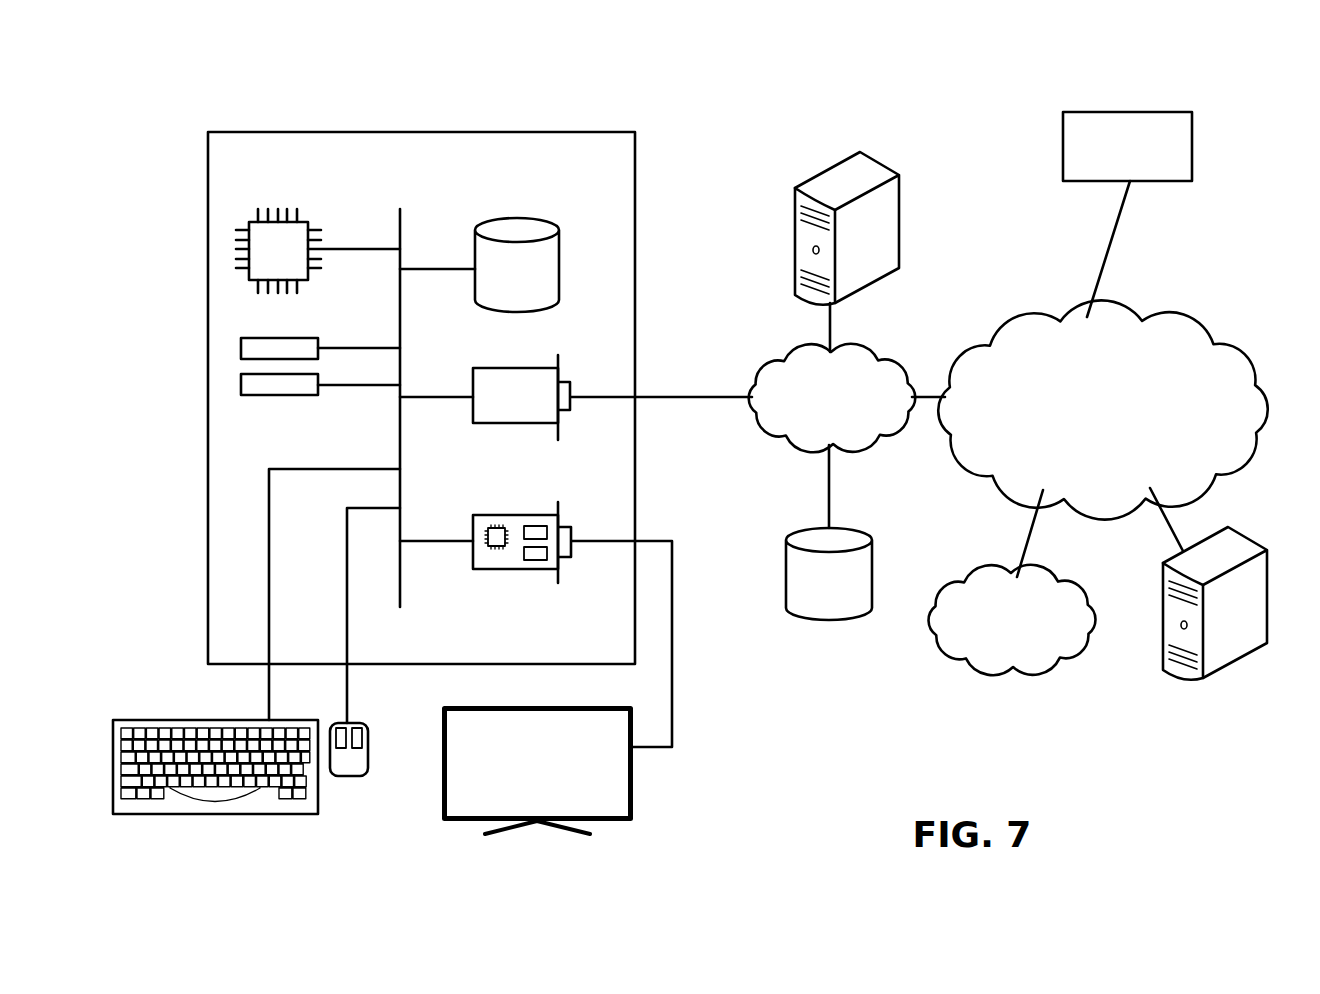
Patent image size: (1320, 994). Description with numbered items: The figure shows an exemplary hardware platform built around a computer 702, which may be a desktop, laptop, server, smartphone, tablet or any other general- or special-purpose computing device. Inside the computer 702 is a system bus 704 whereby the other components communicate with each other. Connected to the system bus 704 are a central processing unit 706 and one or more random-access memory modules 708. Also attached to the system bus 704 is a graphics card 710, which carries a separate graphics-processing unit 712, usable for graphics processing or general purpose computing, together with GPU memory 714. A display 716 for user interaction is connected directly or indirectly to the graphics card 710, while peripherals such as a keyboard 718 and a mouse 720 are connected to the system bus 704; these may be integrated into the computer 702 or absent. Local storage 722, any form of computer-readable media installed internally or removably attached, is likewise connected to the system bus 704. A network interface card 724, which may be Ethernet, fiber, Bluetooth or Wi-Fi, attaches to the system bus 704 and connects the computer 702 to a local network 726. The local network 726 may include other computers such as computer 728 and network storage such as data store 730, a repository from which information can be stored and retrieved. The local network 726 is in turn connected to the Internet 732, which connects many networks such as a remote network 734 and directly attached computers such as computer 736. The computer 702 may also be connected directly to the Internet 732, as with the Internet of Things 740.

The computer 702 is at (590, 132).
The system bus 704 is at (402, 218).
The central processing unit (CPU) 706 is at (305, 218).
The random-access memory (RAM) modules 708 is at (319, 383).
The graphics card 710 is at (536, 609).
The graphics-processing unit (GPU) 712 is at (495, 548).
The GPU memory 714 is at (534, 561).
The display 716 is at (633, 800).
The keyboard 718 is at (218, 814).
The mouse 720 is at (347, 776).
The local storage 722 is at (562, 250).
The network interface card (NIC) 724 is at (471, 380).
The local network 726 is at (884, 353).
The computer 728 is at (885, 165).
The data store 730 is at (863, 530).
The Internet 732 is at (1148, 317).
The remote network 734 is at (1070, 577).
The computer 736 is at (1233, 530).
The Internet of Things (IoT) 740 is at (1175, 112).